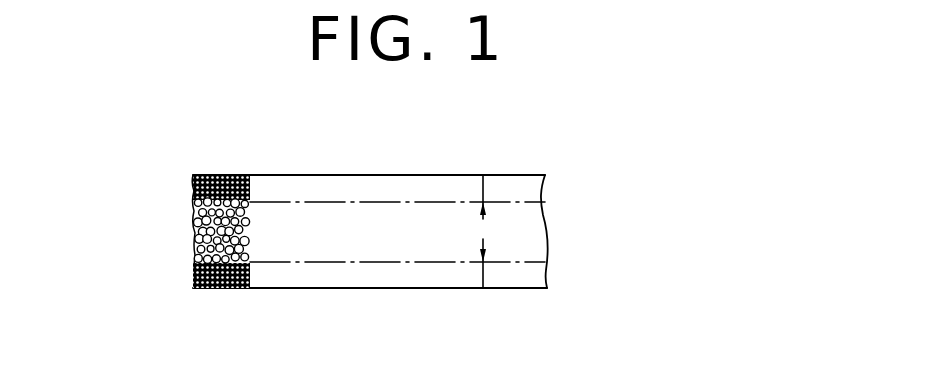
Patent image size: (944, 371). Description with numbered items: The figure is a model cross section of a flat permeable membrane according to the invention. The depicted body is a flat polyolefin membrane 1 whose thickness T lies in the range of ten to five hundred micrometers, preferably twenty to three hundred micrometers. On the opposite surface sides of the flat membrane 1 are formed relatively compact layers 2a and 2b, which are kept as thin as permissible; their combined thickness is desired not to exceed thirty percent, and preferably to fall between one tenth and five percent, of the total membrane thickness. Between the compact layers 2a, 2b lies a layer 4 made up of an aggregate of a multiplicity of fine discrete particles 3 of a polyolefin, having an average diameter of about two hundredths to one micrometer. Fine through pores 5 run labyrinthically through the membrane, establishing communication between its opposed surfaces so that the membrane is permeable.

The flat polyolefin membrane 1 is at (563, 203).
The compact layer 2a is at (225, 178).
The compact layer 2b is at (215, 288).
The fine discrete particles 3 is at (193, 243).
The layer 4 is at (170, 217).
The fine through pores 5 is at (250, 258).